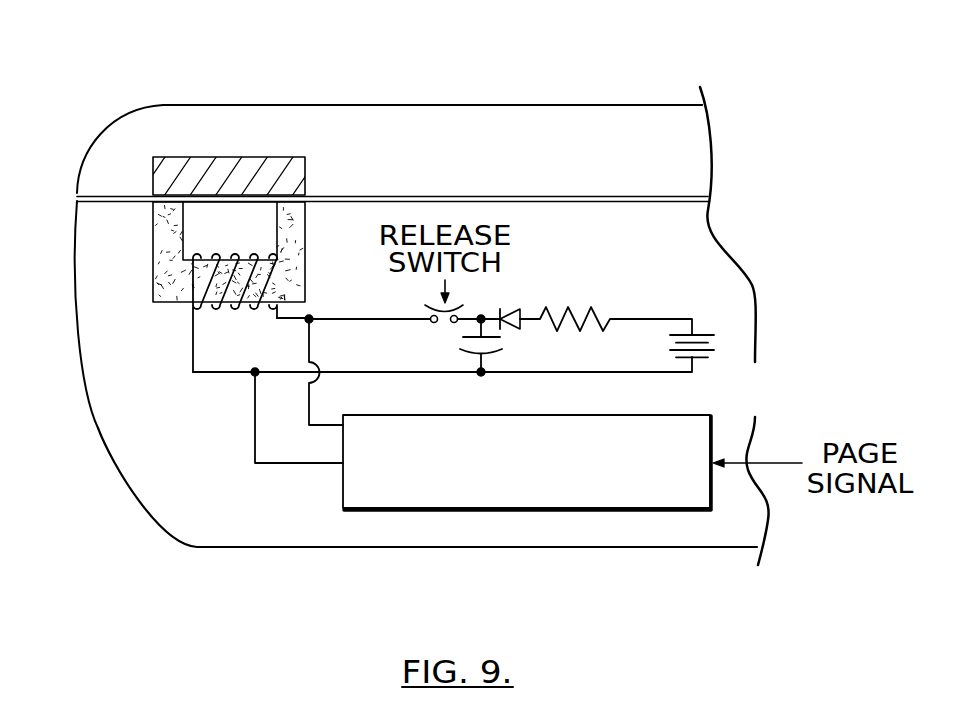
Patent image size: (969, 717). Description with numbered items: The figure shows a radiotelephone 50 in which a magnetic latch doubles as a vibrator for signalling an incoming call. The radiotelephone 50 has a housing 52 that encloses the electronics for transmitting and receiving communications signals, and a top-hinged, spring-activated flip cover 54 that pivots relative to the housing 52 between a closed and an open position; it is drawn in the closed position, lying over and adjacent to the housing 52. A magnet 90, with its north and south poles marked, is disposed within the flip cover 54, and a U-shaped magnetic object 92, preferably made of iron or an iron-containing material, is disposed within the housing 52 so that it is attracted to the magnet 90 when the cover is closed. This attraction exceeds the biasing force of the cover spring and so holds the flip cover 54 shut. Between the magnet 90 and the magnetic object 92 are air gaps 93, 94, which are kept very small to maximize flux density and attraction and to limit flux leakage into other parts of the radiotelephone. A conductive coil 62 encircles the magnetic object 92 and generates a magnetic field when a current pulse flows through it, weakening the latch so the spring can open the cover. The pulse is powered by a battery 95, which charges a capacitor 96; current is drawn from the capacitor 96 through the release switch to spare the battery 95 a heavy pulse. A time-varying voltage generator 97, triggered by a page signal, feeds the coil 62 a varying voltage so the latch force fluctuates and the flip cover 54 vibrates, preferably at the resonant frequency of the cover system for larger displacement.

The radiotelephone 50 is at (91, 105).
The housing 52 is at (192, 503).
The flip cover 54 is at (473, 130).
The conductive coil 62 is at (215, 305).
The magnet 90 is at (222, 167).
The magnetic object 92 is at (167, 239).
The air gap 93 is at (165, 198).
The air gap 94 is at (292, 200).
The battery 95 is at (733, 351).
The capacitor 96 is at (462, 343).
The time-varying voltage generator 97 is at (522, 509).